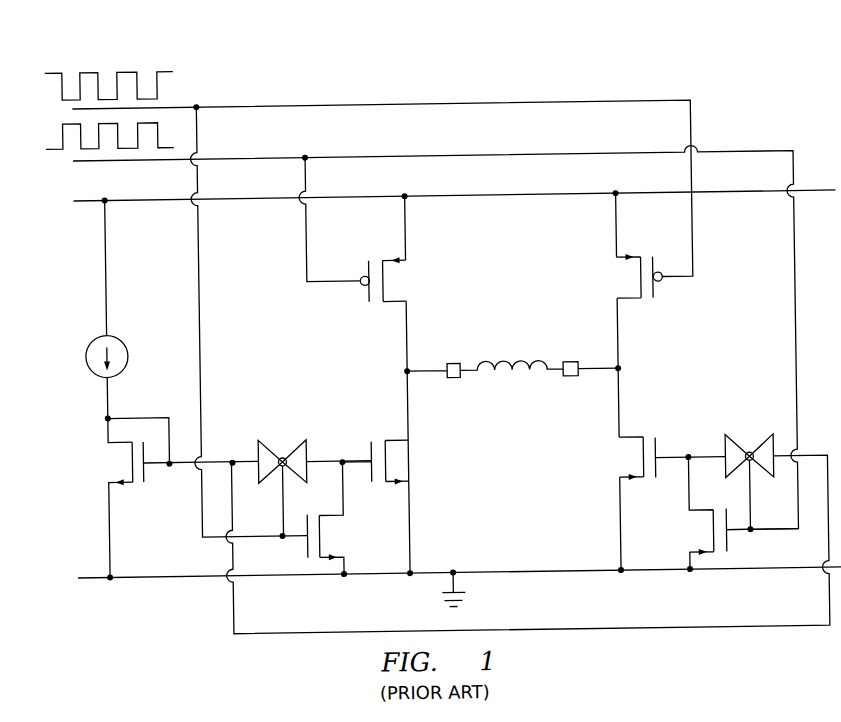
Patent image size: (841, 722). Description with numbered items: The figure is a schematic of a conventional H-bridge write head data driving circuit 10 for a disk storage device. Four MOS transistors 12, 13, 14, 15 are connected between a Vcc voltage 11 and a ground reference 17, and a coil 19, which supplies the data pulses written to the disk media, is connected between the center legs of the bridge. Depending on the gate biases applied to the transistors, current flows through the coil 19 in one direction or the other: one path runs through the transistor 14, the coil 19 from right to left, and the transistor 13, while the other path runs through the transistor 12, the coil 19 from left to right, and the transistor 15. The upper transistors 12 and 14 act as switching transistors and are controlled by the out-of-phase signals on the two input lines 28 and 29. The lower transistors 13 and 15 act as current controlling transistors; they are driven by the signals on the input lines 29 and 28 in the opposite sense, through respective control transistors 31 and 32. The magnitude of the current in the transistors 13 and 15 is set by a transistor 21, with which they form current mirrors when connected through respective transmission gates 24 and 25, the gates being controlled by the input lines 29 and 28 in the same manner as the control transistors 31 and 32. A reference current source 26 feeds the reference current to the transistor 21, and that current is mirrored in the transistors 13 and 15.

The H-bridge write head data driving circuit 10 is at (688, 84).
The Vcc voltage 11 is at (500, 197).
The switching transistor 12 is at (393, 303).
The current controlling transistor 13 is at (396, 435).
The switching transistor 14 is at (634, 305).
The current controlling transistor 15 is at (629, 440).
The ground reference 17 is at (535, 579).
The coil 19 is at (527, 360).
The transistor 21 is at (130, 481).
The transmission gate 24 is at (294, 441).
The transmission gate 25 is at (761, 445).
The reference current source 26 is at (115, 329).
The input line 28 is at (456, 156).
The input line 29 is at (462, 104).
The control transistor 31 is at (331, 516).
The control transistor 32 is at (700, 516).